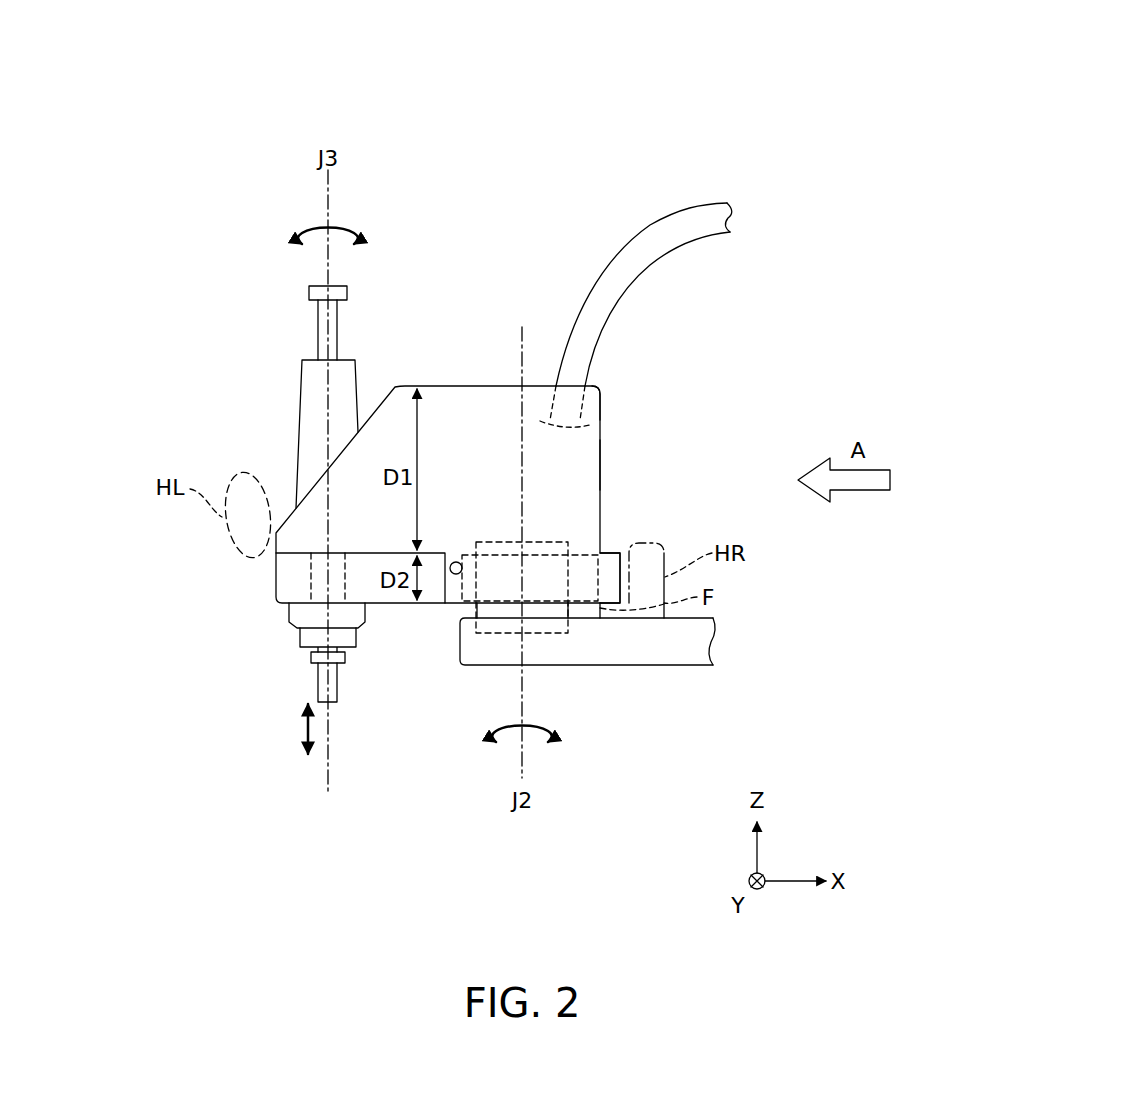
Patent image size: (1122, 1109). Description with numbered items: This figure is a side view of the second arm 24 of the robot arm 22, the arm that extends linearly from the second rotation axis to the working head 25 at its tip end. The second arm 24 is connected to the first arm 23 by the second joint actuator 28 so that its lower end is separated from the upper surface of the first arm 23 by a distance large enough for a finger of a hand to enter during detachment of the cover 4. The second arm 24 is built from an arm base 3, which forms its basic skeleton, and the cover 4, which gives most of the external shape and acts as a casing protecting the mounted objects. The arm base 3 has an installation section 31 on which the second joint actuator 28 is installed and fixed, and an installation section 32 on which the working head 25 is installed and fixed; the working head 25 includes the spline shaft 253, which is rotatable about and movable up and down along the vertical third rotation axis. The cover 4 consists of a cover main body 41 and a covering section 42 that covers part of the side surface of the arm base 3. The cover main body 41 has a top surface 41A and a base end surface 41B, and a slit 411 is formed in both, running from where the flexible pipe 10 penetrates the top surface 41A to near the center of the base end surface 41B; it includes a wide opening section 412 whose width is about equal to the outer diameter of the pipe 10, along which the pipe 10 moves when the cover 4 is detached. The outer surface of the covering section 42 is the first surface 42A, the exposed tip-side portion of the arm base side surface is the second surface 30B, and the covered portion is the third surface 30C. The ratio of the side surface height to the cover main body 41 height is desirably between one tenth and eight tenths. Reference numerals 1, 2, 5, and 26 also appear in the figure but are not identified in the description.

The robot system 1 is at (671, 86).
The robot 2 is at (498, 197).
The arm base 3 is at (288, 578).
The cover 4 is at (498, 405).
The screw 5 is at (452, 562).
The pipe 10 is at (607, 260).
The robot arm 22 is at (730, 683).
The first arm 23 is at (678, 650).
The second arm 24 is at (448, 415).
The working head 25 is at (300, 418).
The shaft lower end 26 is at (316, 682).
The second joint actuator 28 is at (530, 612).
The second surface 30B is at (356, 590).
The third surface 30C is at (458, 588).
The installation section 31 is at (463, 552).
The installation section 32 is at (300, 580).
The cover main body 41 is at (592, 447).
The top surface 41A is at (480, 385).
The base end surface 41B is at (600, 465).
The covering section 42 is at (600, 560).
The first surface 42A is at (583, 590).
The spline shaft 253 is at (318, 330).
The slit 411 is at (540, 385).
The wide opening section 412 is at (600, 410).